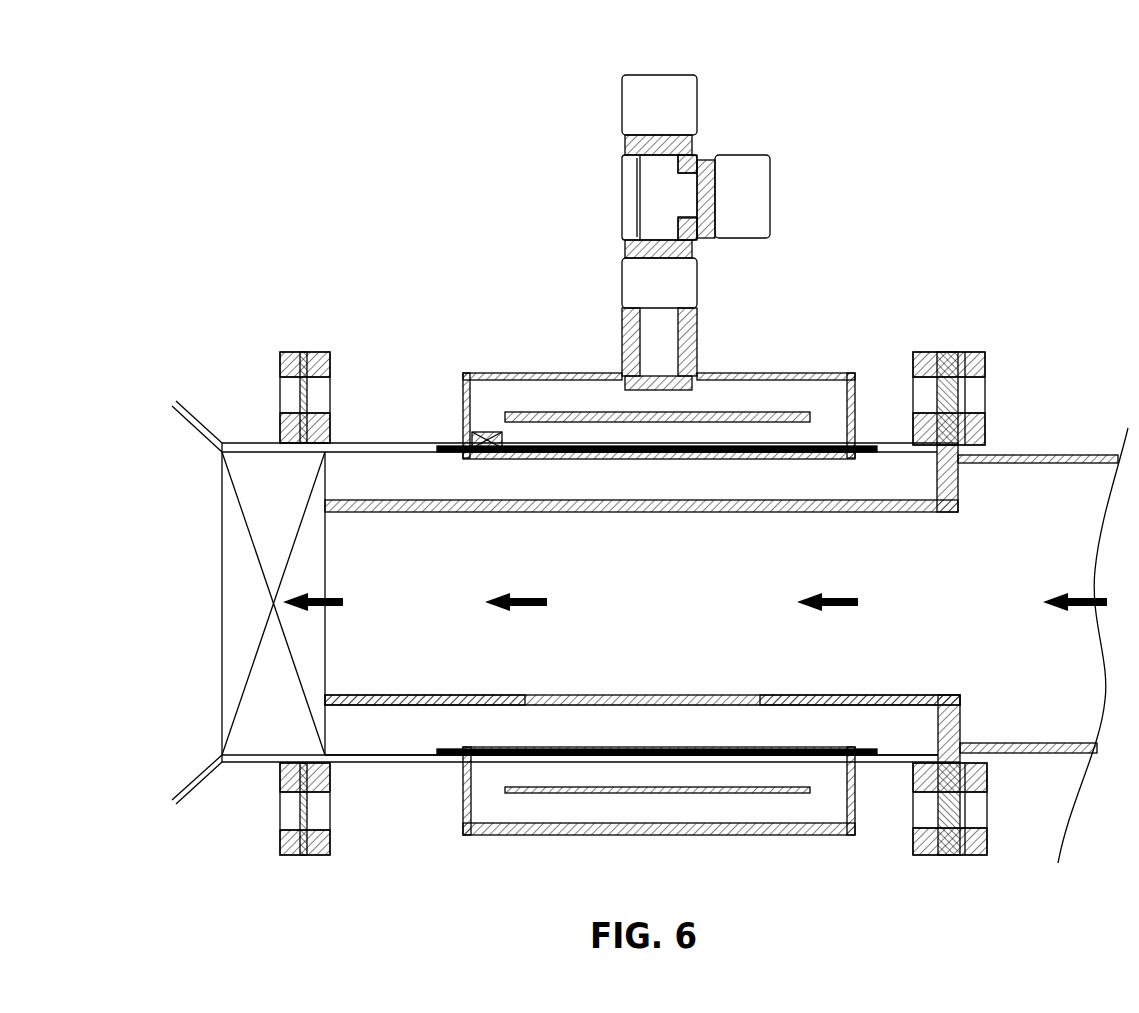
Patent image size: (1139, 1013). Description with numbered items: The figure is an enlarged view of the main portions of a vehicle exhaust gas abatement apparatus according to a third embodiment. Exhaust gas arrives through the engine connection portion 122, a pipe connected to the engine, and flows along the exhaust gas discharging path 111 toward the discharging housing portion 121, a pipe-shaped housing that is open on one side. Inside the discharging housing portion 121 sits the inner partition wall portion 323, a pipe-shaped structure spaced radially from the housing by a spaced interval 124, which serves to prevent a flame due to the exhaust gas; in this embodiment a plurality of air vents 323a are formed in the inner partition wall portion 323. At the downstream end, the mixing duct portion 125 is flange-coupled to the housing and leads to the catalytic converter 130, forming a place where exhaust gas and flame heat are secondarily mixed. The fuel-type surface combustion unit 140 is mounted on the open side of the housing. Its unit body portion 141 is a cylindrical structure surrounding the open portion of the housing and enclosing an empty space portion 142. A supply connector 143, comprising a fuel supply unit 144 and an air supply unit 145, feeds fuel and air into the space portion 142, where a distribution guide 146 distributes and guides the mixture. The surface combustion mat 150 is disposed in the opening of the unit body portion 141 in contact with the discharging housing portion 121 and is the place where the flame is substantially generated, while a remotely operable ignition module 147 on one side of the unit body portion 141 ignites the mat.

The exhaust gas discharging path 111 is at (398, 668).
The discharging housing portion 121 is at (878, 440).
The engine connection portion 122 is at (1063, 455).
The spaced interval 124 is at (857, 483).
The mixing duct portion 125 is at (215, 514).
The catalytic converter 130 is at (388, 418).
The fuel-type surface combustion unit 140 is at (641, 214).
The unit body portion 141 is at (765, 373).
The space portion 142 is at (822, 400).
The supply connector 143 is at (637, 283).
The fuel supply unit 144 is at (755, 195).
The air supply unit 145 is at (660, 95).
The distribution guide 146 is at (725, 400).
The ignition module 147 is at (490, 462).
The surface combustion mat 150 is at (660, 462).
The inner partition wall portion 323 is at (740, 697).
The air vents 323a is at (448, 697).